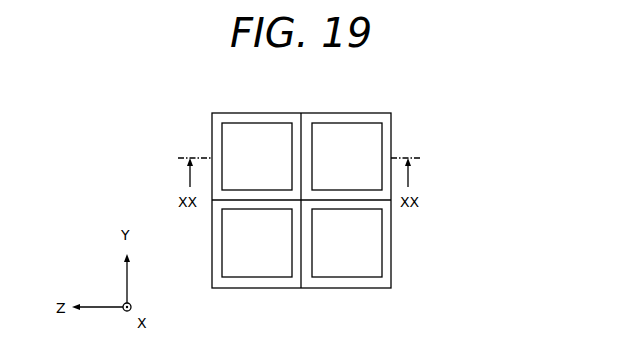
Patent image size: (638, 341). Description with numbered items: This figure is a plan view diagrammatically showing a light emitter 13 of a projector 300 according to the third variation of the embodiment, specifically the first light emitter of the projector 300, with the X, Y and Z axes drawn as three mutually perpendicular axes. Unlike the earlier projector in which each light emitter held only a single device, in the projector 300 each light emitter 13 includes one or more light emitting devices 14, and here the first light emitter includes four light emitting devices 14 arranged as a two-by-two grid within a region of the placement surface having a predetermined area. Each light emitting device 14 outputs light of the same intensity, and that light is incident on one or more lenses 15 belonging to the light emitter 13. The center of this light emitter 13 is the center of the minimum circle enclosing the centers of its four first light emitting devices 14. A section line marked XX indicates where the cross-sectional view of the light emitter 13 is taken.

The projector 300 is at (501, 102).
The light emitter 13 is at (413, 106).
The light emitting device 14 is at (237, 138).
The lens 15 is at (237, 157).